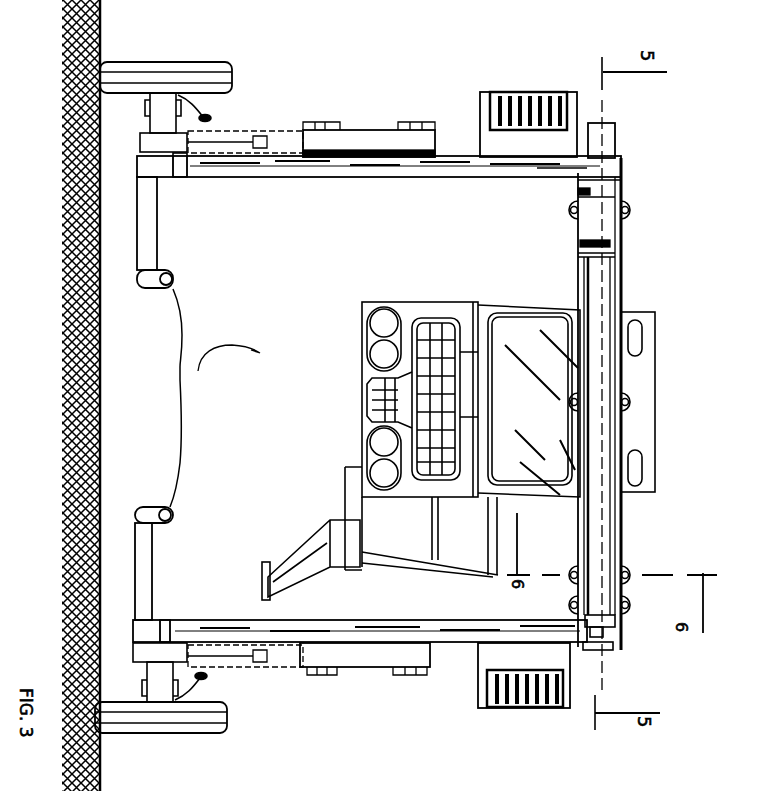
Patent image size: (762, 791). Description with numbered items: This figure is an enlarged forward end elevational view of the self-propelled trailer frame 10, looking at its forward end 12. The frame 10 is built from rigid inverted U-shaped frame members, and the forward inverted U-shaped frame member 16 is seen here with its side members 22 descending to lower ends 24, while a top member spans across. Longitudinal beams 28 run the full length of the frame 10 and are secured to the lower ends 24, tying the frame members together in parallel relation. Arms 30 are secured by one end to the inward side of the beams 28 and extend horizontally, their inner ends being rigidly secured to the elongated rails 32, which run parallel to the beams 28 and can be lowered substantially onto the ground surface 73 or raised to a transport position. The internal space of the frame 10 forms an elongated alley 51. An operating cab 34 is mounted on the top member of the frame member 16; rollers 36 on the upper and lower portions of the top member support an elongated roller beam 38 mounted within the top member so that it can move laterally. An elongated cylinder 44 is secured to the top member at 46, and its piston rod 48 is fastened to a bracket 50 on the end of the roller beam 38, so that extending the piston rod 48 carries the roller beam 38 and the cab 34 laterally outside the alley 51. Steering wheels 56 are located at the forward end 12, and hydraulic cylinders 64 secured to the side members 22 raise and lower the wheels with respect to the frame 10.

The self-propelled trailer frame 10 is at (438, 104).
The forward end of frame 12 is at (453, 152).
The forward inverted U-shaped frame member 16 is at (470, 180).
The side members 22 is at (448, 168).
The lower ends 24 is at (198, 173).
The longitudinal beams 28 is at (160, 168).
The arms 30 is at (150, 212).
The elongated rails 32 is at (176, 398).
The operating cab 34 is at (435, 302).
The rollers 36 is at (631, 213).
The roller beam 38 is at (607, 146).
The cylinder 44 is at (597, 442).
The cylinder securement point 46 is at (610, 242).
The piston rod 48 is at (622, 645).
The bracket 50 is at (597, 651).
The elongated alley 51 is at (223, 367).
The steering wheels 56 is at (232, 74).
The hydraulic cylinders 64 is at (419, 130).
The ground surface 73 is at (100, 360).